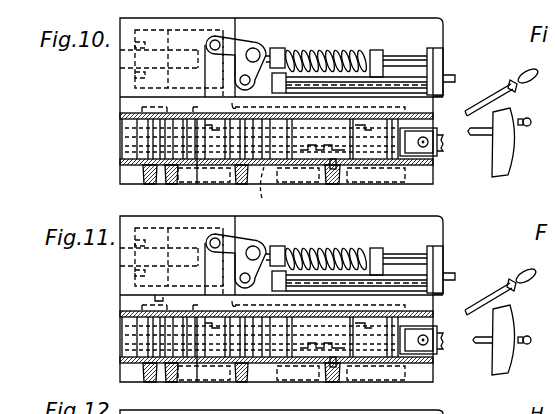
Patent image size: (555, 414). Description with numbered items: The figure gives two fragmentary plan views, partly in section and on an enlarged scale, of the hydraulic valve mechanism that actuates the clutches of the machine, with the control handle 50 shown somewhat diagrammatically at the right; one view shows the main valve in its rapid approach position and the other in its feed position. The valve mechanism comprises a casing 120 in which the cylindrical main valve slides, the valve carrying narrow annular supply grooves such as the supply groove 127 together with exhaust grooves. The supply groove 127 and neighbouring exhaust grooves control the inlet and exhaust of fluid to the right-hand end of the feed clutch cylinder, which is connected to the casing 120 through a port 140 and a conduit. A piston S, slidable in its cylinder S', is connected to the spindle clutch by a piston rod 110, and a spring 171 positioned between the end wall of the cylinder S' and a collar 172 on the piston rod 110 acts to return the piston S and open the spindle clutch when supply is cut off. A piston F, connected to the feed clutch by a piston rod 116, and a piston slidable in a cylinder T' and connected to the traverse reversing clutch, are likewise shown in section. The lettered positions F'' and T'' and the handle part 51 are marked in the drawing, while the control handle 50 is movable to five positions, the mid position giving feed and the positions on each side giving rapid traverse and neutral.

In FIG. 10, the piston rod 110 is at (120, 70).
In FIG. 11, the piston rod 110 is at (287, 299).
In FIG. 10, the piston rod 116 is at (120, 146).
In FIG. 10, the casing 120 is at (338, 113).
In FIG. 10, the supply groove 127 is at (205, 155).
In FIG. 10, the port 140 is at (282, 190).
In FIG. 11, the spring 171 is at (326, 251).
In FIG. 11, the collar 172 is at (382, 250).
In FIG. 10, the handle 51 is at (528, 70).
In FIG. 11, the handle 51 is at (525, 270).
In FIG. 10, the control handle 50 is at (531, 121).
In FIG. 11, the control handle 50 is at (531, 337).
In FIG. 10, the piston S is at (159, 18).
In FIG. 11, the piston S is at (184, 302).
In FIG. 10, the cylinder S' is at (189, 18).
In FIG. 11, the cylinder S' is at (189, 302).
In FIG. 10, the piston F is at (181, 102).
In FIG. 10, the flange F'' is at (140, 102).
In FIG. 10, the cylinder T' is at (270, 200).
In FIG. 11, the cylinder T' is at (363, 387).
In FIG. 10, the tappet T'' is at (387, 193).
In FIG. 11, the tappet T'' is at (401, 390).